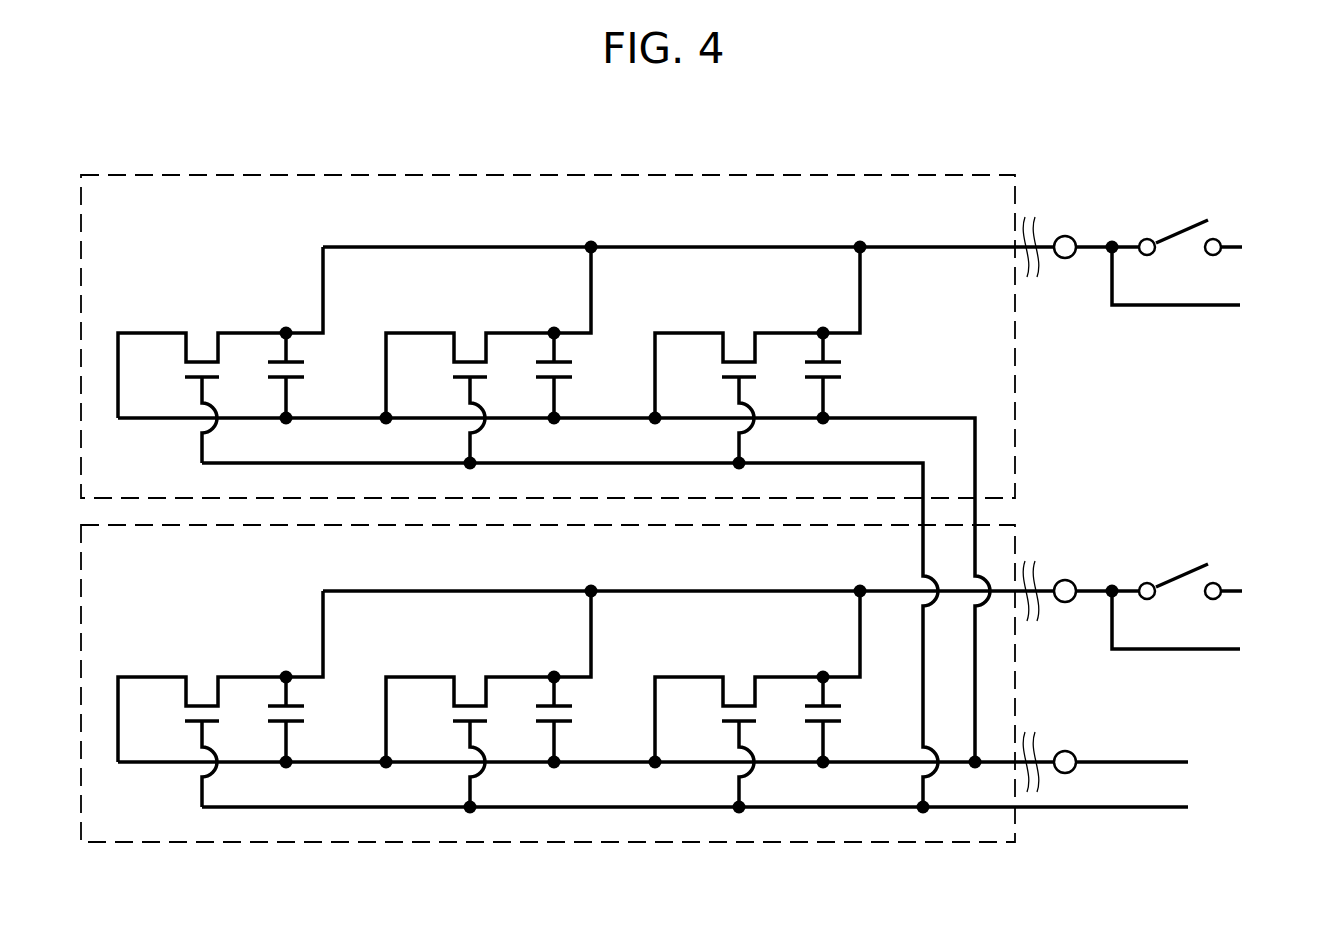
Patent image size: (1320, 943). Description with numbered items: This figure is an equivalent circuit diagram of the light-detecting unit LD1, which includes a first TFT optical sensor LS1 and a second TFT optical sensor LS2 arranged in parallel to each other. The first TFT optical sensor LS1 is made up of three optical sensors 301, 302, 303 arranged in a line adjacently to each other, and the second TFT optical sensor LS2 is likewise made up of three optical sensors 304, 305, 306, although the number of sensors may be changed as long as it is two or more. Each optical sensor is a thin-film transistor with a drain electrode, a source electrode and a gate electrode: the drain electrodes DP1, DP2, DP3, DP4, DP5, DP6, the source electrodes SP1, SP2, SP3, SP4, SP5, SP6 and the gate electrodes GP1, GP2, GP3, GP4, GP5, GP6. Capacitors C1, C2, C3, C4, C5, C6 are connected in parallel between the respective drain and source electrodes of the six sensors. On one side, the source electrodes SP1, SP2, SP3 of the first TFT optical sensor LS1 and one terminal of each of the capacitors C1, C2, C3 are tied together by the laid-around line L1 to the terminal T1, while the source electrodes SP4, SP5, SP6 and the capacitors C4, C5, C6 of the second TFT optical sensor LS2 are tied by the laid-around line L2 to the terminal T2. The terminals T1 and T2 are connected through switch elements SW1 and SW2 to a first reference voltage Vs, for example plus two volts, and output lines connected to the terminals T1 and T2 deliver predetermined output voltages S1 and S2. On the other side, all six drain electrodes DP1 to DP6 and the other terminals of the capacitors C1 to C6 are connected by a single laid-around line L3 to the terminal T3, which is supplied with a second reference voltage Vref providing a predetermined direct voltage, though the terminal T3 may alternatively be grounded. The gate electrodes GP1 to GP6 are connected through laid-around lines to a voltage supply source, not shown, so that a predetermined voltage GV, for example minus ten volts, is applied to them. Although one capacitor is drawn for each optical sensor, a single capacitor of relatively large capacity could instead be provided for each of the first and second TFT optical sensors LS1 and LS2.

The light-detecting unit LD1 is at (550, 97).
The first TFT optical sensor LS1 is at (150, 215).
The second TFT optical sensor LS2 is at (150, 559).
The optical sensor 301 is at (220, 355).
The optical sensor 302 is at (488, 355).
The optical sensor 303 is at (757, 355).
The optical sensor 304 is at (220, 699).
The optical sensor 305 is at (488, 699).
The optical sensor 306 is at (757, 699).
The drain electrode DP1 is at (160, 359).
The source electrode SP1 is at (262, 304).
The gate electrode GP1 is at (178, 405).
The drain electrode DP2 is at (428, 359).
The source electrode SP2 is at (530, 304).
The gate electrode GP2 is at (446, 405).
The drain electrode DP3 is at (697, 359).
The source electrode SP3 is at (799, 304).
The gate electrode GP3 is at (715, 405).
The drain electrode DP4 is at (160, 703).
The source electrode SP4 is at (262, 648).
The gate electrode GP4 is at (178, 749).
The drain electrode DP5 is at (428, 703).
The source electrode SP5 is at (530, 648).
The gate electrode GP5 is at (446, 749).
The drain electrode DP6 is at (697, 703).
The source electrode SP6 is at (799, 648).
The gate electrode GP6 is at (715, 749).
The capacitor C1 is at (305, 375).
The capacitor C2 is at (572, 375).
The capacitor C3 is at (841, 375).
The capacitor C4 is at (305, 719).
The capacitor C5 is at (572, 719).
The capacitor C6 is at (841, 719).
The laid-around line L1 is at (753, 247).
The laid-around line L2 is at (743, 591).
The single laid-around line L3 is at (878, 762).
The terminal T1 is at (1065, 236).
The terminal T2 is at (1065, 580).
The terminal T3 is at (1065, 751).
The switch element SW1 is at (1144, 219).
The switch element SW2 is at (1142, 562).
The first reference voltage Vs is at (1244, 420).
The output voltage S1 is at (1191, 281).
The output voltage S2 is at (1194, 626).
The second reference voltage Vref is at (1164, 763).
The predetermined voltage GV is at (718, 807).